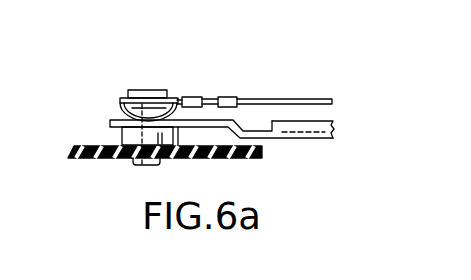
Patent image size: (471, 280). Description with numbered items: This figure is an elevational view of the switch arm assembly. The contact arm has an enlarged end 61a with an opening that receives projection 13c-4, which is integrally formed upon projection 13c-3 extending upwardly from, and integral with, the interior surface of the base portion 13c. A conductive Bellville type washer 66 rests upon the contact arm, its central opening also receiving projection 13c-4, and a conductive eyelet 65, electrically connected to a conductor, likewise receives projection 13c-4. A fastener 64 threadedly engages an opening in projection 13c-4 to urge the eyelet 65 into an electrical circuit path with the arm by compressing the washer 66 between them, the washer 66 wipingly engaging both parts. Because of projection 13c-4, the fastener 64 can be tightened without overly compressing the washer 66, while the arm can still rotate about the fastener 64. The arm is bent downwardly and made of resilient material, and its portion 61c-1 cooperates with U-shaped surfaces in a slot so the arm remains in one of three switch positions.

The base portion 13c is at (209, 159).
The projection 13c-3 is at (117, 132).
The projection 13c-4 is at (155, 112).
The enlarged end 61a is at (133, 120).
The portion of contact arm 61c-1 is at (307, 140).
The fastener 64 is at (160, 91).
The conductive eyelet 65 is at (124, 99).
The conductive Bellville type washer 66 is at (126, 117).